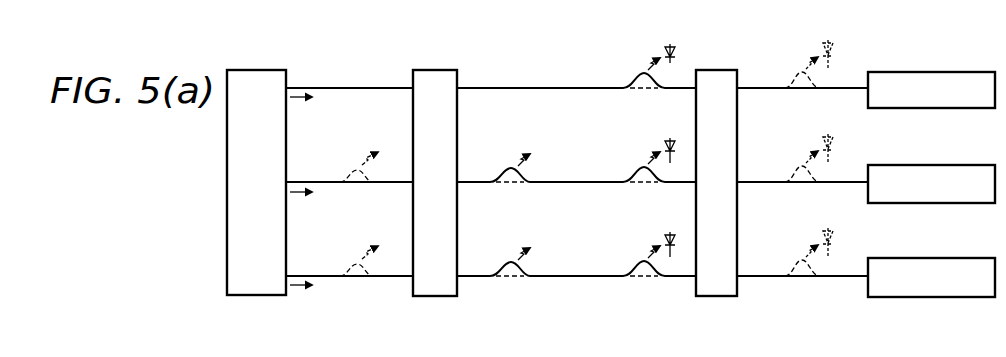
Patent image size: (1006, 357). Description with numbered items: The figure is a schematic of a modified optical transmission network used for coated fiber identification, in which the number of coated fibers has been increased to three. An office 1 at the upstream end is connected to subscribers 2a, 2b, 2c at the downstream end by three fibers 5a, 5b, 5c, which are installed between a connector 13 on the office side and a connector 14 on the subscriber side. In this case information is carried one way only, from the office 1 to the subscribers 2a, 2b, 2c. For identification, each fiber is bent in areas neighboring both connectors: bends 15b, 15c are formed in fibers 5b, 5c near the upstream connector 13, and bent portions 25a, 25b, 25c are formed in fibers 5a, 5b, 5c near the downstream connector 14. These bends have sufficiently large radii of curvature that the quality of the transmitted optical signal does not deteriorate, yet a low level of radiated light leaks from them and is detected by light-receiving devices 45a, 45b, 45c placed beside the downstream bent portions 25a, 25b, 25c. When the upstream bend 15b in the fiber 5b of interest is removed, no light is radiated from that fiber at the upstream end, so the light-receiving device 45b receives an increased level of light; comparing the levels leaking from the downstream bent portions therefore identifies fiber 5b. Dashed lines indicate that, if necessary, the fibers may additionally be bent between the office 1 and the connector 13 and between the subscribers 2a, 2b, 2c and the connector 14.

The office 1 is at (254, 70).
The connector 13 is at (434, 70).
The connector 14 is at (717, 70).
The fiber 5a is at (549, 87).
The fiber 5b is at (574, 181).
The fiber 5c is at (574, 275).
The bend 15b is at (512, 185).
The bend 15c is at (512, 279).
The bent portion 25a is at (645, 93).
The bent portion 25b is at (643, 188).
The bent portion 25c is at (647, 282).
The light-receiving device 45a is at (665, 51).
The light-receiving device 45b is at (665, 146).
The light-receiving device 45c is at (665, 240).
The subscriber 2a is at (953, 72).
The subscriber 2b is at (950, 165).
The subscriber 2c is at (955, 258).